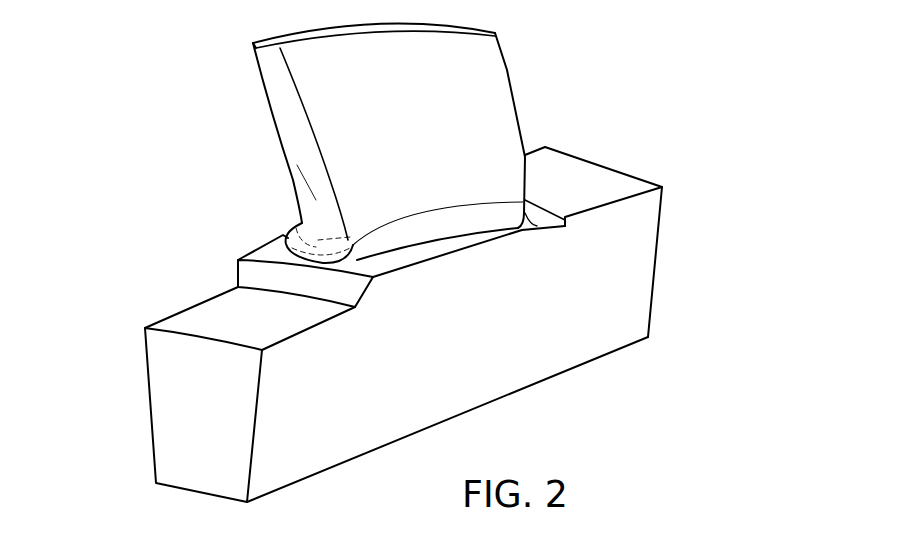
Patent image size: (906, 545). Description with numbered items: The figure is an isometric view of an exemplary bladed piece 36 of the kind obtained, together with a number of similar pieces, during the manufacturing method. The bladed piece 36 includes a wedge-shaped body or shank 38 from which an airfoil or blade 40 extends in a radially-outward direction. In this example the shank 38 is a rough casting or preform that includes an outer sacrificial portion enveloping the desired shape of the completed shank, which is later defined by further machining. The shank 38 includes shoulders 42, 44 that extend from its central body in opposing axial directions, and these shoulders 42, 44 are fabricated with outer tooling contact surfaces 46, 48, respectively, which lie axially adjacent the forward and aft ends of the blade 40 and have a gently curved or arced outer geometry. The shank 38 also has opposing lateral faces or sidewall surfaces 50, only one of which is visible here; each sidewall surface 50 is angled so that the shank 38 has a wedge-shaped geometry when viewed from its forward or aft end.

The bladed piece 36 is at (182, 168).
The shank 38 is at (640, 308).
The blade 40 is at (507, 70).
The shoulder 42 is at (148, 410).
The shoulder 44 is at (657, 243).
The outer tooling contact surface 46 is at (193, 307).
The outer tooling contact surface 48 is at (603, 163).
The sidewall surface 50 is at (493, 349).